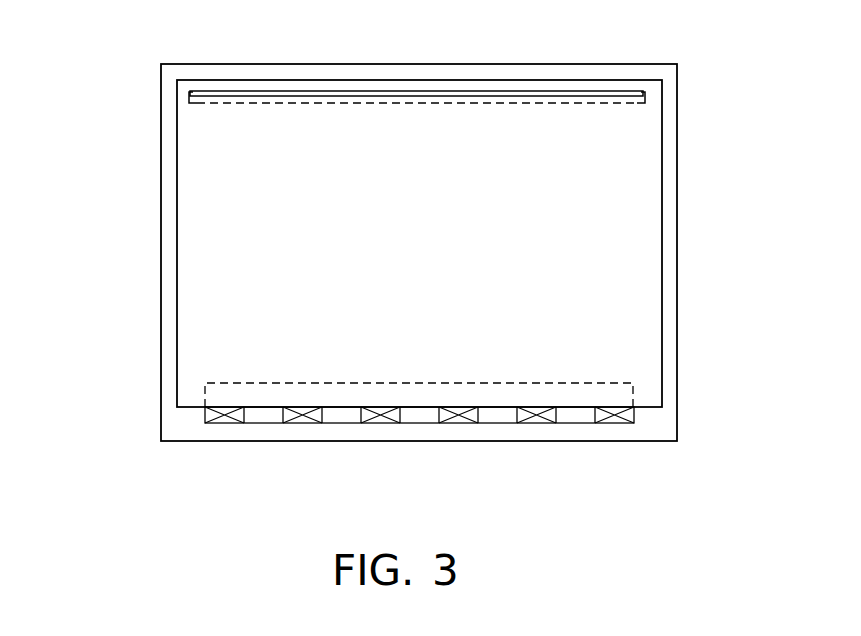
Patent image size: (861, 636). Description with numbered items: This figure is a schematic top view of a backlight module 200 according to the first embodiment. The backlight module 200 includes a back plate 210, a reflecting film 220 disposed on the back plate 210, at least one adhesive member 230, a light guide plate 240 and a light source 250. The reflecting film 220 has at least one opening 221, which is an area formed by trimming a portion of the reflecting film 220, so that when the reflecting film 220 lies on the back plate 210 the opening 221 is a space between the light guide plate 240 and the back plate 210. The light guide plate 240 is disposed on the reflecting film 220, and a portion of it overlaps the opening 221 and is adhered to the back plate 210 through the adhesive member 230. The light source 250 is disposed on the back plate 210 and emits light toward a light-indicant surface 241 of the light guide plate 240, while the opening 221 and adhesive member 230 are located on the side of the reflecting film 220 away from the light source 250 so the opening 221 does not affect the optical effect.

The backlight module 200 is at (99, 38).
The back plate 210 is at (670, 73).
The reflecting film 220 is at (176, 89).
The opening 221 is at (188, 99).
The adhesive member 230 is at (602, 90).
The light guide plate 240 is at (198, 215).
The light-indicant surface 241 is at (613, 413).
The light source 250 is at (618, 423).